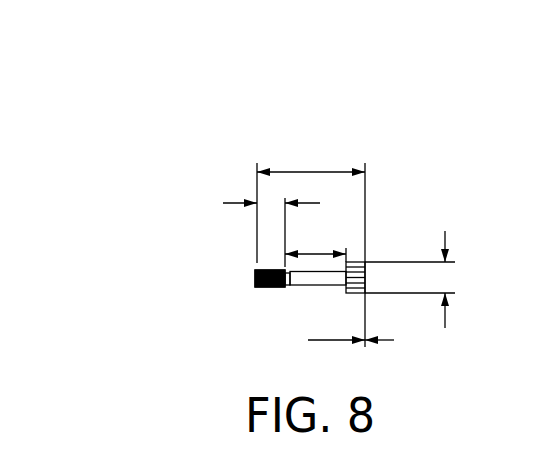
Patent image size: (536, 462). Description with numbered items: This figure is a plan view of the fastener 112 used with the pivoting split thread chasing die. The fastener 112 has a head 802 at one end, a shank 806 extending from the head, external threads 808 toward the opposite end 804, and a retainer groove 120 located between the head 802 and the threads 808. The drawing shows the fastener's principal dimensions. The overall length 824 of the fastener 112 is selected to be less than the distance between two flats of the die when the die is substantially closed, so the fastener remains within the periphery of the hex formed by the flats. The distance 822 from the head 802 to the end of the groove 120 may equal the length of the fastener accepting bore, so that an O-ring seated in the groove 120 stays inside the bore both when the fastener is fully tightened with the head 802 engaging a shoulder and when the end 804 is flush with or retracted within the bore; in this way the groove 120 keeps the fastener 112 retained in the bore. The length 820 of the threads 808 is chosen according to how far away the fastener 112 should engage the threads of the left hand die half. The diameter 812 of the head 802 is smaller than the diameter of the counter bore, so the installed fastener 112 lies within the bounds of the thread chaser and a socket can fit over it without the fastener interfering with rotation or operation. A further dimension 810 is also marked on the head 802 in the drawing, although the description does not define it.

The fastener 112 is at (462, 128).
The head 802 is at (365, 262).
The end 804 is at (255, 279).
The shank 806 is at (305, 286).
The external threads 808 is at (265, 288).
The retainer groove 120 is at (288, 287).
The head length 810 is at (371, 341).
The diameter of head 812 is at (445, 269).
The length of threads 820 is at (221, 204).
The distance from head to end of groove 822 is at (315, 253).
The overall length 824 is at (326, 171).